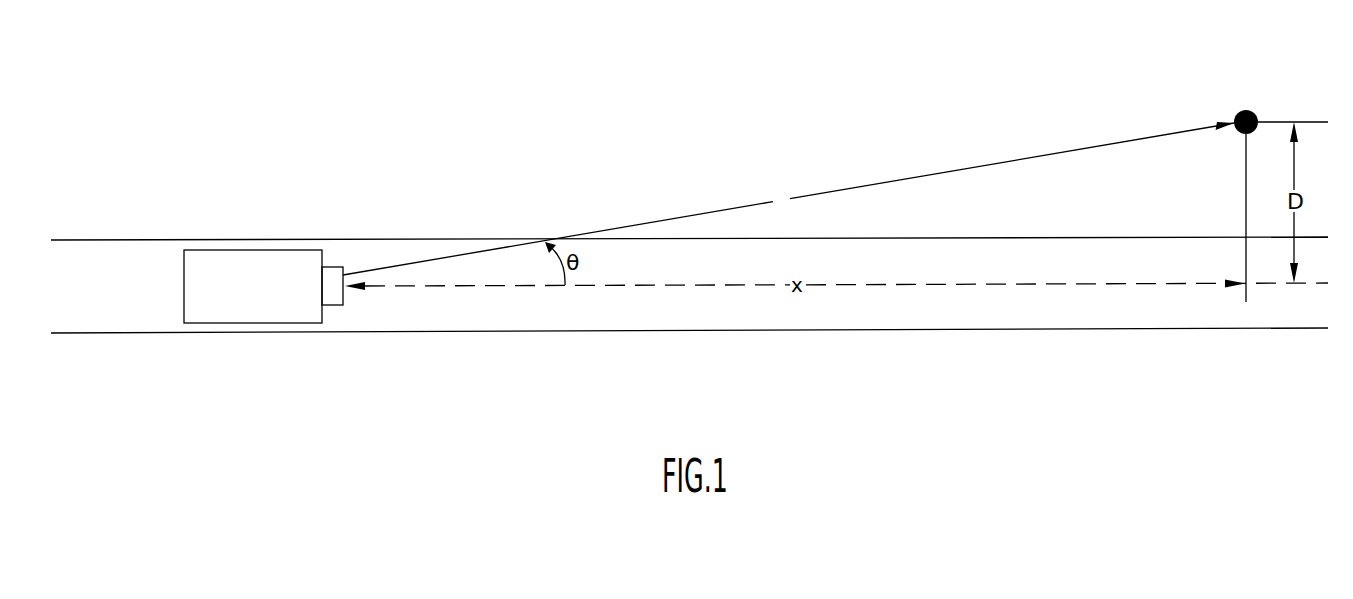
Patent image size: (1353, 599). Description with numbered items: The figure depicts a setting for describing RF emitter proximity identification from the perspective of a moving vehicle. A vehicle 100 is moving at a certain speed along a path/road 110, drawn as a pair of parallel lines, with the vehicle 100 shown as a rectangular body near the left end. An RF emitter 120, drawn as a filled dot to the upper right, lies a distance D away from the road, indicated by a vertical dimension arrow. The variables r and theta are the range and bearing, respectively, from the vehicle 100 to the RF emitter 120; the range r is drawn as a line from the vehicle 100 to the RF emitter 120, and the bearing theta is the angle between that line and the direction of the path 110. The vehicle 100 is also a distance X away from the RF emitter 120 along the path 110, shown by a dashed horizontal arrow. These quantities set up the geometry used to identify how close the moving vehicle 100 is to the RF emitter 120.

The vehicle 100 is at (252, 250).
The path/road 110 is at (367, 260).
The RF emitter 120 is at (1241, 112).